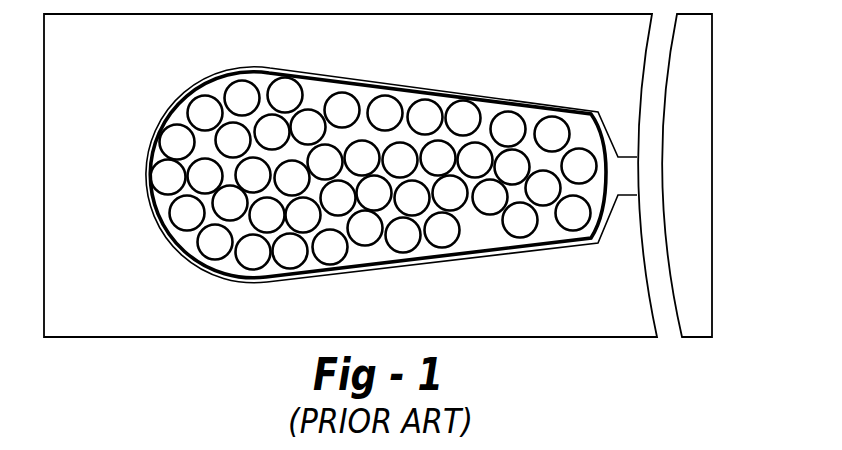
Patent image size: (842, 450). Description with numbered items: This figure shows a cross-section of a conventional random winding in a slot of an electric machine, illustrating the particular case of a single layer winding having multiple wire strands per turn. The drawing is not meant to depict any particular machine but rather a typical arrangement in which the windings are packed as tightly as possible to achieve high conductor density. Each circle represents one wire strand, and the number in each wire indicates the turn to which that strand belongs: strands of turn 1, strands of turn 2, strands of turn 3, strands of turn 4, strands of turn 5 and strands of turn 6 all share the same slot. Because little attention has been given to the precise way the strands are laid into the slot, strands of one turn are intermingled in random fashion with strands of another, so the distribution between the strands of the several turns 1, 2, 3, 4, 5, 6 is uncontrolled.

The turn number one wire strands 1 is at (496, 166).
The turn number two wire strands 2 is at (469, 137).
The turn number three wire strands 3 is at (405, 222).
The turn number four wire strands 4 is at (289, 205).
The turn number five wire strands 5 is at (288, 137).
The turn number six wire strands 6 is at (211, 163).